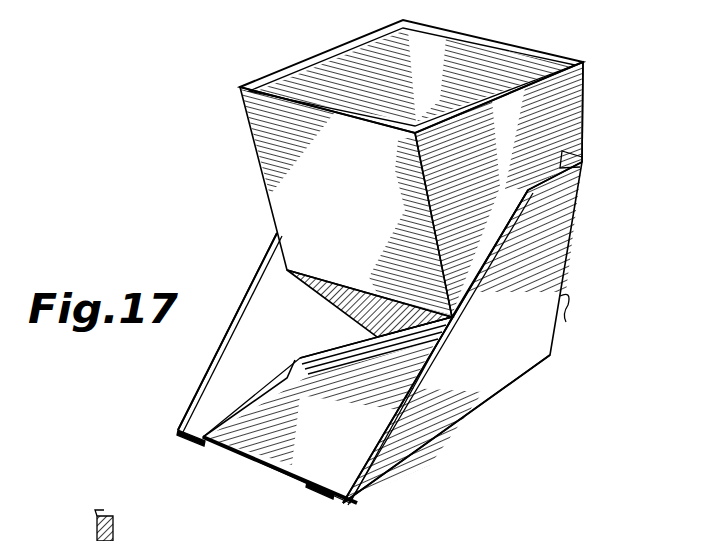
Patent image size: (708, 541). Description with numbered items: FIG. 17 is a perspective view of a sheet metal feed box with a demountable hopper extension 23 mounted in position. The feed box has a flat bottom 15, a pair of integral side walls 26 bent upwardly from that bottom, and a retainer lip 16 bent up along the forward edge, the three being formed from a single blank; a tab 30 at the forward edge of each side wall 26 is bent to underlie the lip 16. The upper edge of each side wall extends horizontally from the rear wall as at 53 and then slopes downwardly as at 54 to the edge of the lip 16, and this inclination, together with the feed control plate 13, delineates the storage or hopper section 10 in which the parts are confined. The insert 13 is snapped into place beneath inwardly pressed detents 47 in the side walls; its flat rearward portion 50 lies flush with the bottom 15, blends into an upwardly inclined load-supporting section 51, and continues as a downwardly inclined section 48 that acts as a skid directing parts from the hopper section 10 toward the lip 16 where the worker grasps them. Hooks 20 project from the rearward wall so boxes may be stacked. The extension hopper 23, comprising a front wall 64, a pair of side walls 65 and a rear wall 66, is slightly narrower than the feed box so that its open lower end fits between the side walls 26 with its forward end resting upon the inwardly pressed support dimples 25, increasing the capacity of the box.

The storage section 10 is at (547, 218).
The feed control plate 13 is at (334, 348).
The bottom 15 is at (355, 466).
The retainer lip 16 is at (272, 467).
The hooks 20 is at (574, 300).
The hopper extension 23 is at (586, 102).
The support dimples 25 is at (287, 270).
The side walls 26 is at (552, 245).
The tab 30 is at (190, 441).
The detents 47 is at (296, 364).
The downwardly inclined section 48 is at (343, 410).
The flat rearward portion 50 is at (443, 334).
The load-supporting section 51 is at (405, 362).
The horizontal upper edge 53 is at (583, 142).
The sloping edge 54 is at (271, 253).
The front wall 64 is at (262, 139).
The side walls 65 is at (311, 68).
The rear wall 66 is at (506, 62).